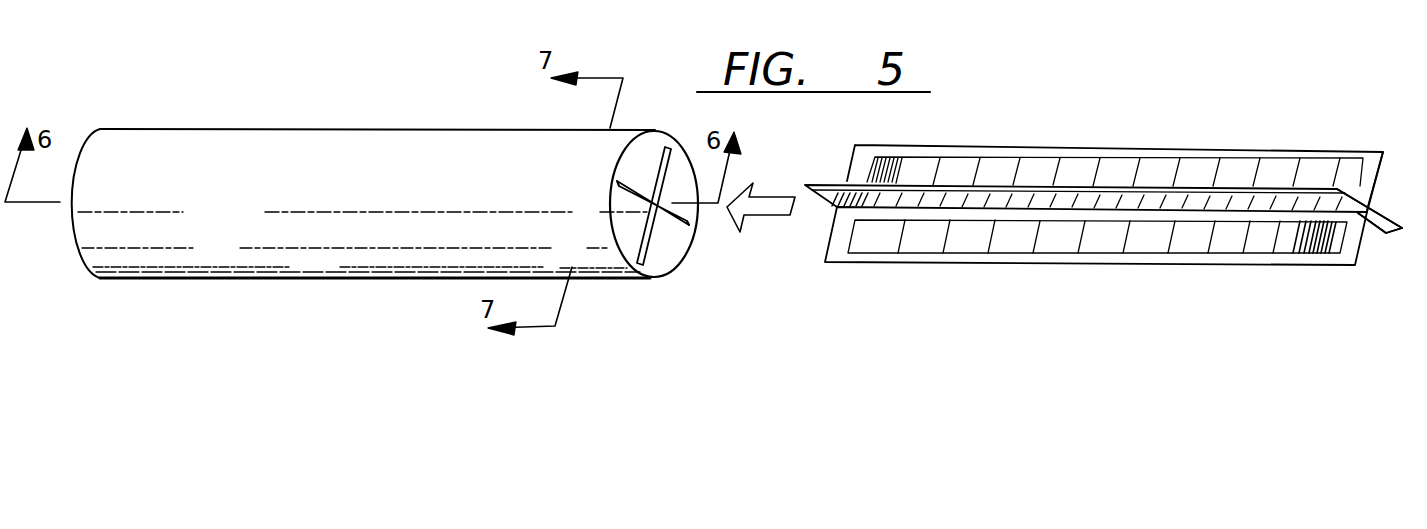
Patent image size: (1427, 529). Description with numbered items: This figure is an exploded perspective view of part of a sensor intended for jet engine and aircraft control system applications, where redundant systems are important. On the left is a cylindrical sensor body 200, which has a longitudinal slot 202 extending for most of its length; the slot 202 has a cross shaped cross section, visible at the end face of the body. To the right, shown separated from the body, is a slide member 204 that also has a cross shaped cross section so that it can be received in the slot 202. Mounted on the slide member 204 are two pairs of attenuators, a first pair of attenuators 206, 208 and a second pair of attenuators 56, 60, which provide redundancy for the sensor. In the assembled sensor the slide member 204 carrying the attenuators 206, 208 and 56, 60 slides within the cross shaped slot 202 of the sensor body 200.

The cylindrical sensor body 200 is at (293, 128).
The longitudinal slot 202 is at (648, 235).
The slide member 204 is at (837, 254).
The attenuator 206 is at (1275, 170).
The attenuator 208 is at (1032, 242).
The attenuator 56 is at (1110, 200).
The attenuator 60 is at (1372, 228).